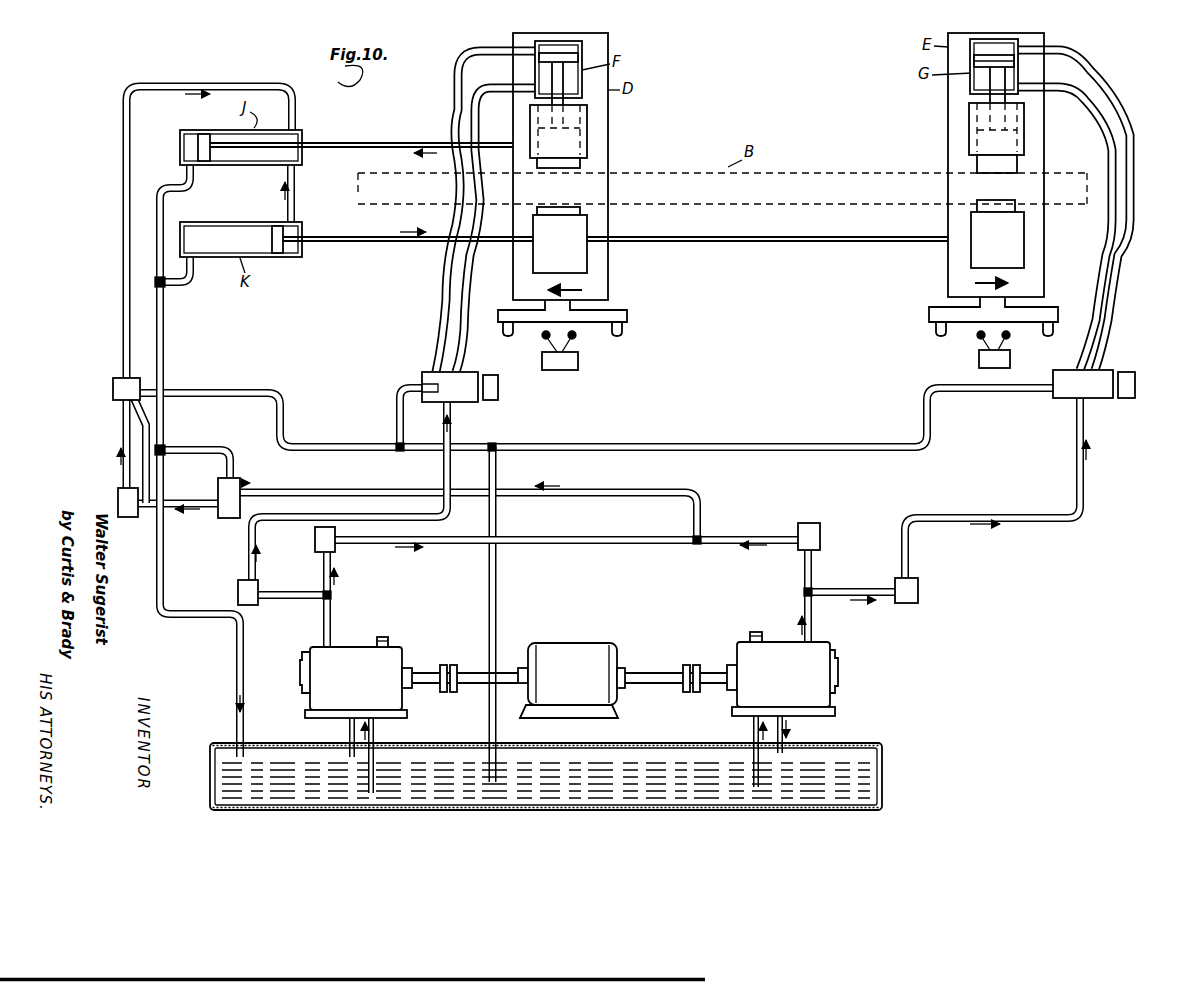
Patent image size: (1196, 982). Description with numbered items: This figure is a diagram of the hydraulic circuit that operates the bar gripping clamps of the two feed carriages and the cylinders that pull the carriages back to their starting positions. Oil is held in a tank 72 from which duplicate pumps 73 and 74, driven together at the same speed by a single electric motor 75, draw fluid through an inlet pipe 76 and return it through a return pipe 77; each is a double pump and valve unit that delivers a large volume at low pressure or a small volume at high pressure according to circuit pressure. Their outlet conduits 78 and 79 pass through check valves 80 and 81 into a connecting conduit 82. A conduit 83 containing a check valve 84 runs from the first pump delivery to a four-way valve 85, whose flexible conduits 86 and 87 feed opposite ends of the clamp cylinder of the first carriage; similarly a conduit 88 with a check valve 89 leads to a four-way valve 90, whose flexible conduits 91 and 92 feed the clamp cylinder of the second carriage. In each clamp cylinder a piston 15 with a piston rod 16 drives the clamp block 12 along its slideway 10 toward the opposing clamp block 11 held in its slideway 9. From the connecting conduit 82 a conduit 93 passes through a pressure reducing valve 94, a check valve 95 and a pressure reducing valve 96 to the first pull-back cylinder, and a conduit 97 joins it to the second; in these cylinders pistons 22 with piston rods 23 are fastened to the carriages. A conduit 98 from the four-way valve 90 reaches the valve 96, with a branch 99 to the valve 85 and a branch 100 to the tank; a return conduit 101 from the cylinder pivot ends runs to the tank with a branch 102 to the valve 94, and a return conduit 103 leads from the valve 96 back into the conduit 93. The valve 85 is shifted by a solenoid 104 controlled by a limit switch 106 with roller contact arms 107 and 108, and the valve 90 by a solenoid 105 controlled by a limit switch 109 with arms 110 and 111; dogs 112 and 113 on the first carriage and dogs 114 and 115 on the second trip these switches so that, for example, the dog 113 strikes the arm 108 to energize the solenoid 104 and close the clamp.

The slideway 9 is at (582, 259).
The slideway 10 is at (572, 143).
The clamp block 11 is at (553, 210).
The clamp block 12 is at (556, 166).
The piston 15 is at (539, 60).
The piston rod 16 is at (565, 80).
The piston 22 is at (204, 134).
The piston rod 23 is at (388, 143).
The tank 72 is at (659, 744).
The pump 73 is at (316, 698).
The pump 74 is at (805, 700).
The electric motor 75 is at (569, 680).
The inlet pipe 76 is at (375, 735).
The return pipe 77 is at (349, 731).
The outlet conduit 78 is at (331, 620).
The outlet conduit 79 is at (813, 623).
The check valve 80 is at (315, 543).
The check valve 81 is at (820, 536).
The connecting conduit 82 is at (560, 538).
The conduit 83 is at (443, 464).
The check valve 84 is at (242, 606).
The four-way valve 85 is at (448, 381).
The flexible conduit 86 is at (476, 47).
The flexible conduit 87 is at (488, 98).
The conduit 88 is at (1086, 480).
The check valve 89 is at (919, 586).
The four-way valve 90 is at (1098, 400).
The flexible conduit 91 is at (1068, 86).
The flexible conduit 92 is at (1062, 46).
The conduit 93 is at (292, 87).
The pressure reducing valve 94 is at (218, 516).
The check valve 95 is at (118, 506).
The pressure reducing valve 96 is at (113, 396).
The conduit 97 is at (295, 179).
The conduit 98 is at (253, 388).
The branch 99 is at (396, 408).
The branch 100 is at (496, 612).
The return conduit 101 is at (165, 332).
The branch 102 is at (186, 445).
The return conduit 103 is at (144, 434).
The solenoid 104 is at (491, 401).
The solenoid 105 is at (1130, 372).
The limit switch 106 is at (578, 363).
The roller contact arm 107 is at (543, 341).
The roller contact arm 108 is at (576, 339).
The limit switch 109 is at (980, 362).
The roller contact arm 110 is at (978, 338).
The roller contact arm 111 is at (1010, 338).
The dog 112 is at (504, 332).
The dog 113 is at (622, 331).
The dog 114 is at (937, 333).
The dog 115 is at (1053, 331).